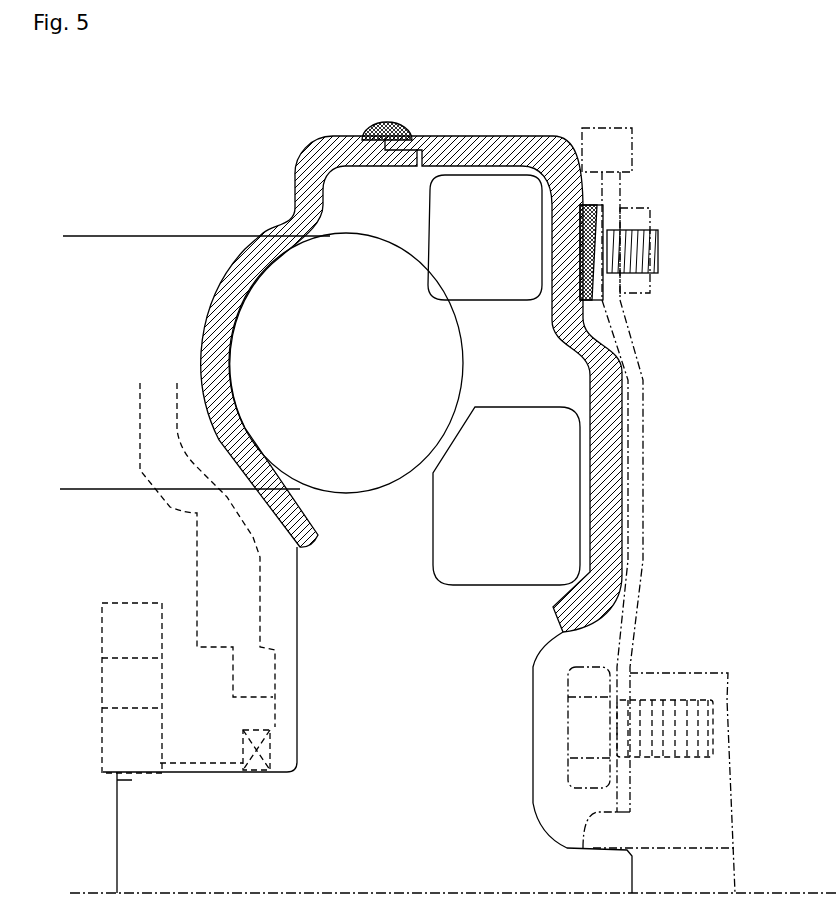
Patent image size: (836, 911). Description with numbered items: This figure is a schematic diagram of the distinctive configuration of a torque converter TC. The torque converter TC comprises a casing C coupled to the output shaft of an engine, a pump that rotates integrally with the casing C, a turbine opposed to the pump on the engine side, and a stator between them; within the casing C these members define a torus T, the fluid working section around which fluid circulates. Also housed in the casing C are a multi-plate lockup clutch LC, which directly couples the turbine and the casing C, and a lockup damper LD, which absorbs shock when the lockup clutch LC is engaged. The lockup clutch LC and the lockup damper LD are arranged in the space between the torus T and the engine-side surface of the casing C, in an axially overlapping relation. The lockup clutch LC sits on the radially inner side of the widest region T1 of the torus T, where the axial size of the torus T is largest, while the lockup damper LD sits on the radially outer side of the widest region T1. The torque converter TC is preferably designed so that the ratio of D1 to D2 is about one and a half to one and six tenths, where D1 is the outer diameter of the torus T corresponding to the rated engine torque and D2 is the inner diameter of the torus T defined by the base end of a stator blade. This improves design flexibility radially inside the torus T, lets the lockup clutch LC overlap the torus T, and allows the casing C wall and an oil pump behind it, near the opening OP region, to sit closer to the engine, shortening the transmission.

The casing C is at (293, 173).
The torque converter TC is at (543, 120).
The torus T is at (346, 363).
The widest region of the torus T1 is at (470, 367).
The lockup damper LD is at (485, 237).
The multi-plate lockup clutch LC is at (506, 496).
The opening OP is at (205, 619).
The outer diameter of the torus D1 is at (85, 235).
The inner diameter of the torus D2 is at (84, 488).